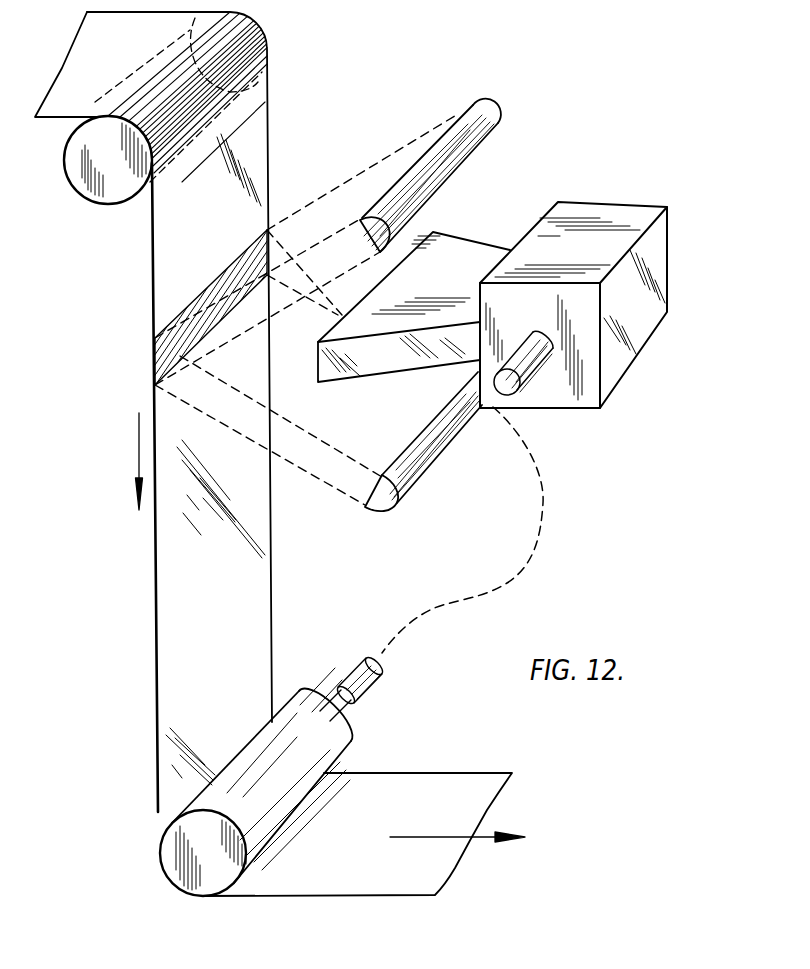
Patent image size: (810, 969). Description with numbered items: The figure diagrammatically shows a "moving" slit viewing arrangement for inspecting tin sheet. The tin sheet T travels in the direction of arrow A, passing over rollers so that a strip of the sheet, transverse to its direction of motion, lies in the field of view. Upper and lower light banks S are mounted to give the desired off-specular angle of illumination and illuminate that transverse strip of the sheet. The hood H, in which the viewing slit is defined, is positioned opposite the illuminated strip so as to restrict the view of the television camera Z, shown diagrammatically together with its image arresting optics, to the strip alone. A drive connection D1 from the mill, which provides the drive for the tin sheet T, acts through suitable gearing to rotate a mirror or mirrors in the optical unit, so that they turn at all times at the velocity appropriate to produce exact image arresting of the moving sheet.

The tin sheet T is at (224, 596).
The arrow A is at (132, 461).
The light banks S is at (476, 108).
The hood H is at (435, 287).
The television camera Z is at (618, 207).
The drive connection D1 is at (517, 573).